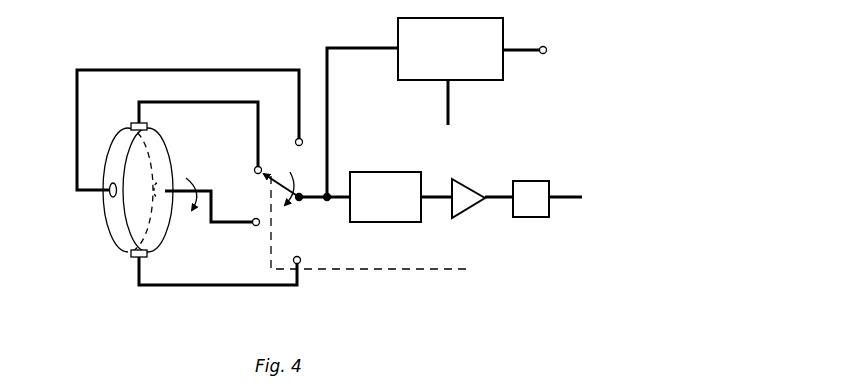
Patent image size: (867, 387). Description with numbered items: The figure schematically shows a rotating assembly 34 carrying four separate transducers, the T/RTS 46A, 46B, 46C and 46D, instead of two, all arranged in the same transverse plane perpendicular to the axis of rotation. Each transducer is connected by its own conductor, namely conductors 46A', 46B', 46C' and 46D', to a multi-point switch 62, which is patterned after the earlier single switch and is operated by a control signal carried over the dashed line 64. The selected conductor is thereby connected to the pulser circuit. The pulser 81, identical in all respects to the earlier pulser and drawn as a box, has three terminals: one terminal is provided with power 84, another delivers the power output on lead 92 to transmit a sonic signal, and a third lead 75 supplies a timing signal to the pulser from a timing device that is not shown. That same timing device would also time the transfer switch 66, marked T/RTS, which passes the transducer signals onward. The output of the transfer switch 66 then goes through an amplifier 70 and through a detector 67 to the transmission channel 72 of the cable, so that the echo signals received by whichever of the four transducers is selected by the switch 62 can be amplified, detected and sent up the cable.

The rotating assembly 34 is at (118, 222).
The T/RTS 46A is at (101, 263).
The T/RTS 46B is at (203, 181).
The T/RTS 46C is at (116, 127).
The T/RTS 46D is at (84, 200).
The conductor 46A' is at (218, 284).
The conductor 46B' is at (226, 235).
The conductor 46C' is at (198, 134).
The conductor 46D' is at (190, 114).
The switch 62 is at (275, 158).
The dashed line 64 is at (366, 269).
The transfer switch 66 is at (370, 172).
The detector 67 is at (534, 181).
The amplifier 70 is at (466, 184).
The transmission channel 72 is at (562, 200).
The lead 75 is at (452, 122).
The pulser 81 is at (480, 80).
The power 84 is at (532, 48).
The lead 92 is at (330, 122).